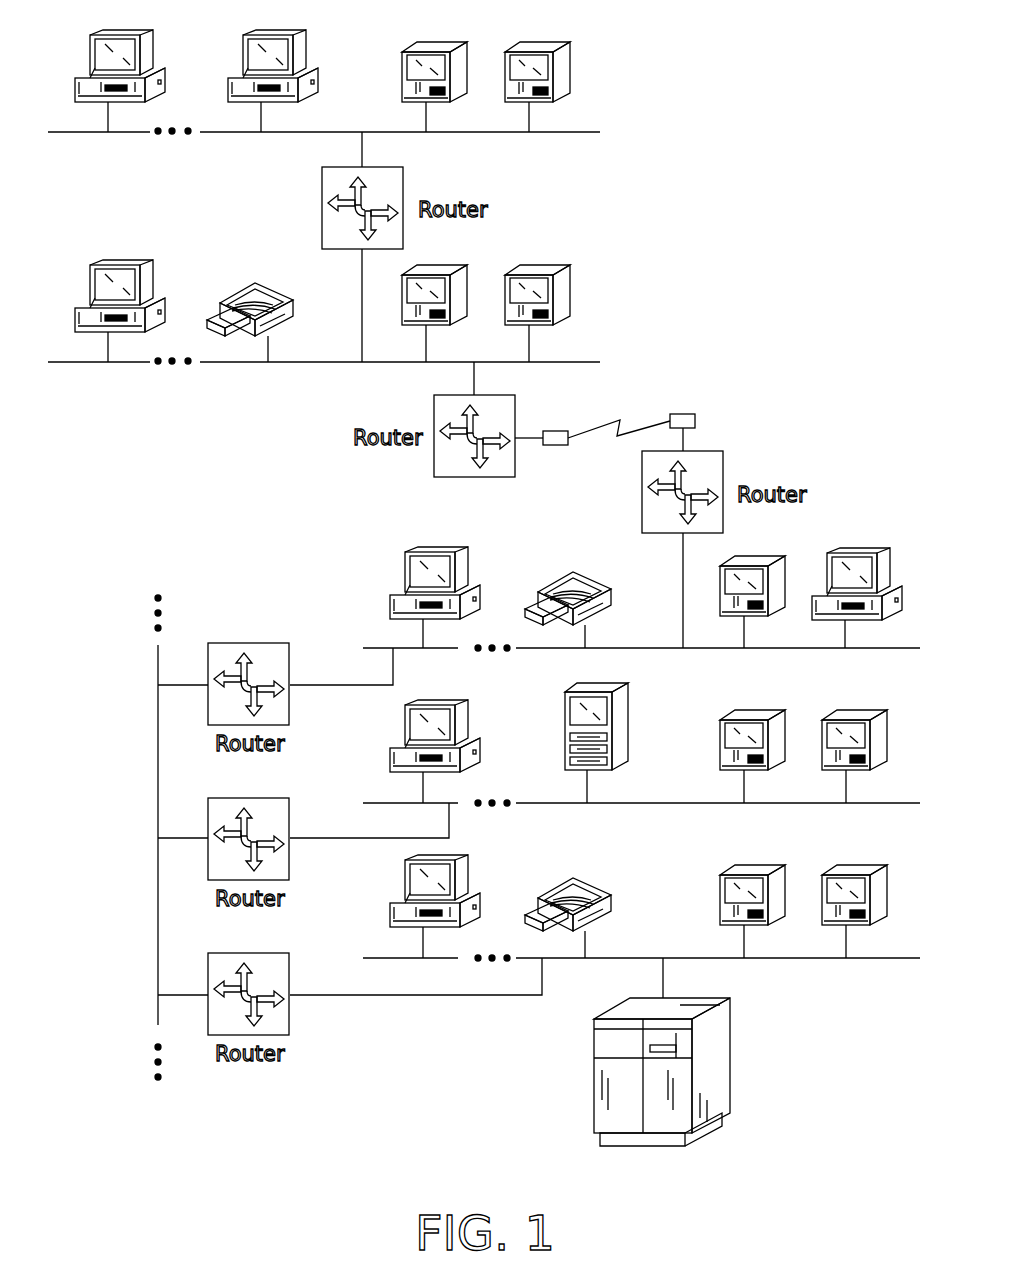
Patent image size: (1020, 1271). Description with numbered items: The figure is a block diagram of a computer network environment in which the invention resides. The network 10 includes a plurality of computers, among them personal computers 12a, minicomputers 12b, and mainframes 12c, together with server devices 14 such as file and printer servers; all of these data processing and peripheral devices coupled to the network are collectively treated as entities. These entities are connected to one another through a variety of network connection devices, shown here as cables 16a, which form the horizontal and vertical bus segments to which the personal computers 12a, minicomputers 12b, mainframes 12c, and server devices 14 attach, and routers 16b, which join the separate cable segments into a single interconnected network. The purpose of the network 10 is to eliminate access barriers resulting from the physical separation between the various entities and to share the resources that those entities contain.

The network 10 is at (88, 821).
The personal computers 12a is at (400, 57).
The minicomputers 12b is at (893, 583).
The mainframes 12c is at (592, 1086).
The server devices 14 is at (80, 68).
The cables 16a is at (235, 134).
The routers 16b is at (718, 452).